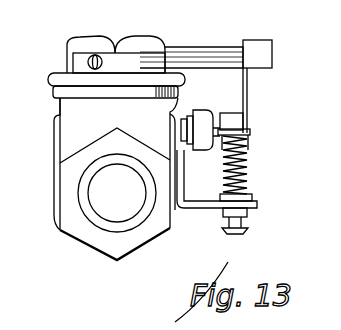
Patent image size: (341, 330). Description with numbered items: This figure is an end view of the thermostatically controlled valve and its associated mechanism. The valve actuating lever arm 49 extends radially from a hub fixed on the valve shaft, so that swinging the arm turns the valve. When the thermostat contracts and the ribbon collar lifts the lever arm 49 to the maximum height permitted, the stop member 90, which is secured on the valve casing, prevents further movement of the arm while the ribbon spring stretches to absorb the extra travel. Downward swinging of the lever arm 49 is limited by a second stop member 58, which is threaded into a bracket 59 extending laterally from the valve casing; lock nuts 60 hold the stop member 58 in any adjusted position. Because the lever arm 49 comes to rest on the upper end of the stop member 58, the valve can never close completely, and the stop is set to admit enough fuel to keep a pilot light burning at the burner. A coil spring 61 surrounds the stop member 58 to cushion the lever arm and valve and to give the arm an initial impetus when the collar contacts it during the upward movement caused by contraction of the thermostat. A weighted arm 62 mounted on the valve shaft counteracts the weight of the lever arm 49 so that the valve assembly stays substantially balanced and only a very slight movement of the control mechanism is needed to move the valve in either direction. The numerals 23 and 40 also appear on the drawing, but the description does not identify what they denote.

The valve body 23 is at (73, 128).
The stop member 90 is at (189, 57).
The weighted arm 62 is at (248, 92).
The valve actuating lever arm 49 is at (248, 132).
The coil spring 61 is at (238, 153).
The stop member 58 is at (240, 167).
The lock nuts 60 is at (247, 212).
The bracket 59 is at (200, 213).
The support 40 is at (11, 311).